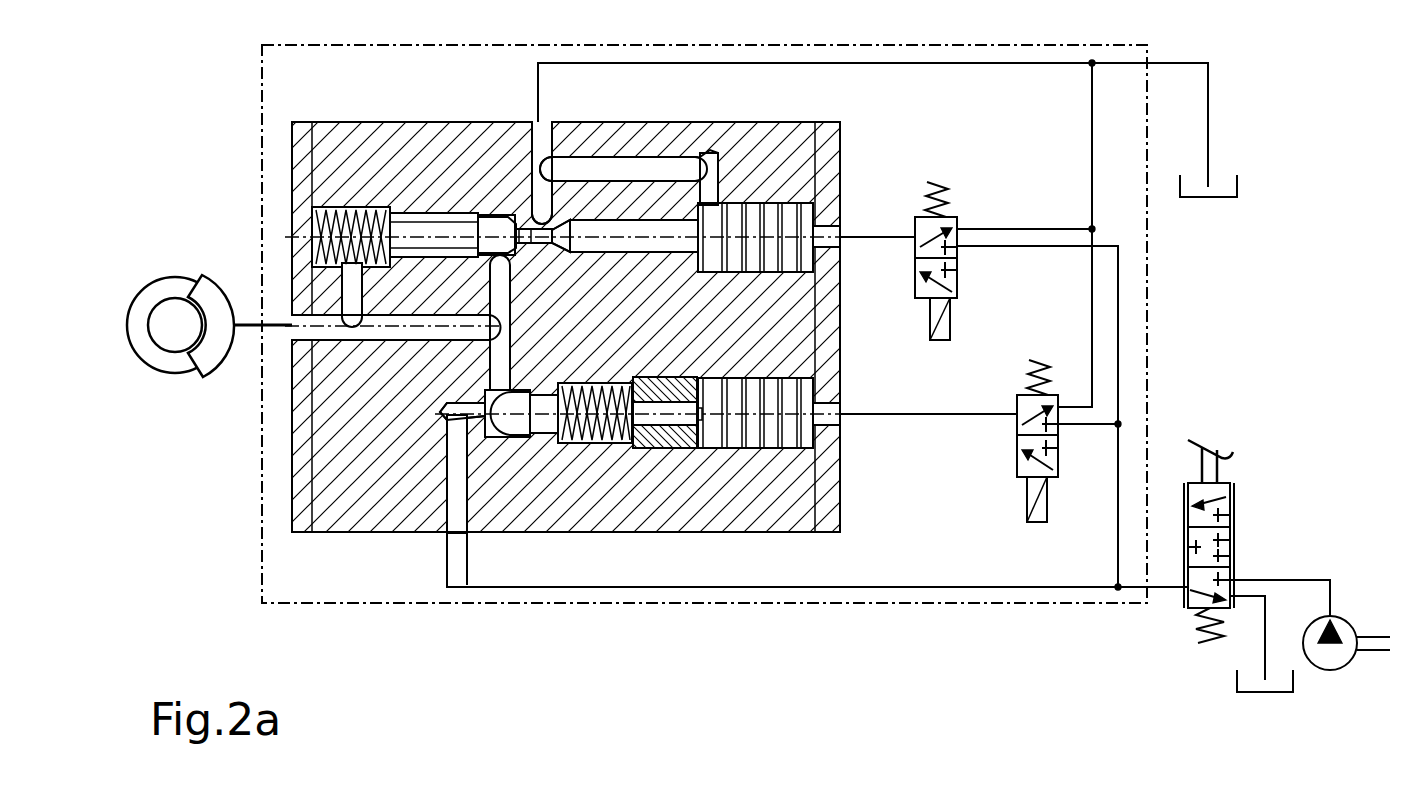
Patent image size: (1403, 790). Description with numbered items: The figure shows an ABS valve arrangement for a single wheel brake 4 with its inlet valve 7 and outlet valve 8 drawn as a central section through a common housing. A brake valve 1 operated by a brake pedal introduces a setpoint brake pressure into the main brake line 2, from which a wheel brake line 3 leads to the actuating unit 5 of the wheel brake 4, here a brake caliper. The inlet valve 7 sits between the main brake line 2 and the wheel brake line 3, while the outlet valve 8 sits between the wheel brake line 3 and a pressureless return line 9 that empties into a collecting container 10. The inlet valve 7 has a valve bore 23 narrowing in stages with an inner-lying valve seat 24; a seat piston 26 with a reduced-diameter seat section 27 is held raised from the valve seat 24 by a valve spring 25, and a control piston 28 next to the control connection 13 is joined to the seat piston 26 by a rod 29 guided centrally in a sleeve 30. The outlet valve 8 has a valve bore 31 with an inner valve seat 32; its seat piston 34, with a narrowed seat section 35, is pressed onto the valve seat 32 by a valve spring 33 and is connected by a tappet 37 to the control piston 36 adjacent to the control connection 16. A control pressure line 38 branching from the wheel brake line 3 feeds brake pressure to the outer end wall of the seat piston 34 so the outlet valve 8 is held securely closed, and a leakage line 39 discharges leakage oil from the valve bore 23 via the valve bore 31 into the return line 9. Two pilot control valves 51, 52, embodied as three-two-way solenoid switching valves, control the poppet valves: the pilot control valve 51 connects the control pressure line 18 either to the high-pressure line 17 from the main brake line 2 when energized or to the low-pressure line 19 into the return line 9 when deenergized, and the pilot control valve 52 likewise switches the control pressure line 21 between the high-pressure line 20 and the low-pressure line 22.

The brake valve 1 is at (1268, 543).
The main brake line 2 is at (948, 590).
The wheel brake line 3 is at (248, 330).
The wheel brake 4 is at (146, 412).
The actuating unit 5 is at (208, 355).
The inlet valve 7 is at (577, 488).
The outlet valve 8 is at (442, 178).
The return line 9 is at (1208, 140).
The collecting container 10 is at (1237, 185).
The control connection 13 is at (842, 414).
The control connection 16 is at (842, 237).
The high-pressure line 17 is at (1093, 430).
The control pressure line 18 is at (915, 416).
The low-pressure line 19 is at (1150, 283).
The high-pressure line 20 is at (1070, 248).
The control pressure line 21 is at (878, 239).
The low-pressure line 22 is at (1022, 229).
The valve bore 23 is at (697, 440).
The valve seat 24 is at (477, 465).
The valve spring 25 is at (605, 440).
The seat piston 26 is at (550, 425).
The seat section 27 is at (508, 430).
The control piston 28 is at (770, 430).
The rod 29 is at (673, 440).
The sleeve 30 is at (657, 422).
The valve bore 31 is at (413, 213).
The valve seat 32 is at (521, 195).
The valve spring 33 is at (338, 208).
The seat piston 34 is at (462, 227).
The seat section 35 is at (499, 222).
The control piston 36 is at (770, 223).
The tappet 37 is at (598, 225).
The control pressure line 38 is at (350, 295).
The leakage line 39 is at (648, 170).
The pilot control valve 51 is at (1017, 445).
The pilot control valve 52 is at (957, 265).